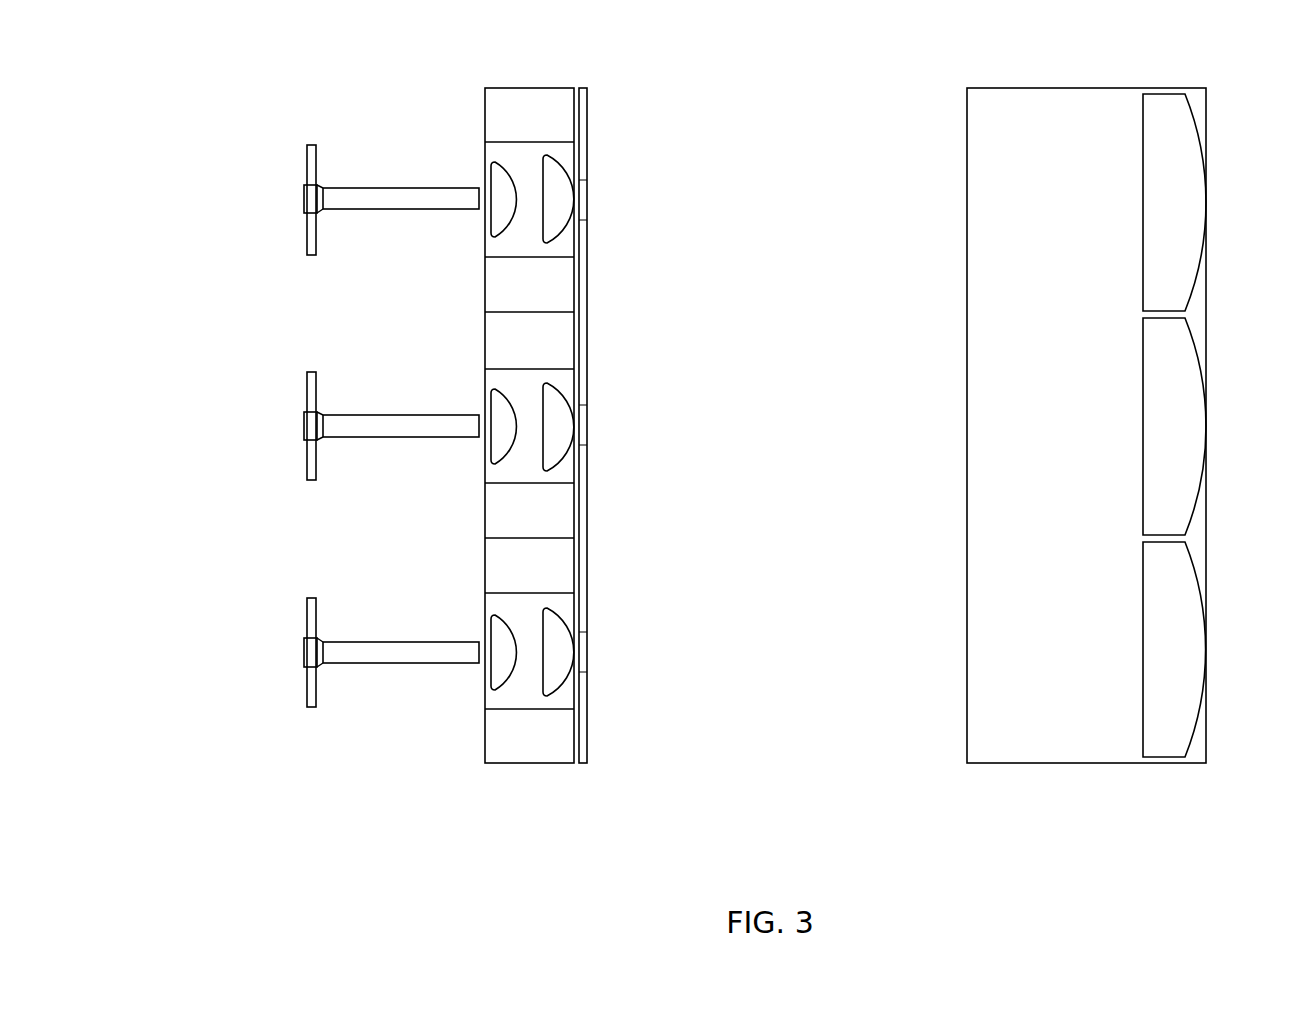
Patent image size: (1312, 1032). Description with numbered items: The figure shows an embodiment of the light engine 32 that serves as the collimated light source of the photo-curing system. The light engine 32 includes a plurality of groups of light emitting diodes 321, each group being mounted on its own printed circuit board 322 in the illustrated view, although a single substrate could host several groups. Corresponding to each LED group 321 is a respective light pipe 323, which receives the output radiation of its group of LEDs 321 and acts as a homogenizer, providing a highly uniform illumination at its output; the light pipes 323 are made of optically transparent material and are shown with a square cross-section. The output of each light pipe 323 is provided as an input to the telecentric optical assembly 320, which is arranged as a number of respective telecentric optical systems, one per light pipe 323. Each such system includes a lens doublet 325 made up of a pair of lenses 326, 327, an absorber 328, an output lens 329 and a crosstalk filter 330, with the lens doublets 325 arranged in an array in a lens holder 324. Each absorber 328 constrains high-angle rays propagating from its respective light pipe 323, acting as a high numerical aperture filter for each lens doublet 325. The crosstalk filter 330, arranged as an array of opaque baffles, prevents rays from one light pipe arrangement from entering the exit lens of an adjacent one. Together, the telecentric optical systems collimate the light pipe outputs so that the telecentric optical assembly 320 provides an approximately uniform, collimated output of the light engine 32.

The light engine 32 is at (1058, 47).
The telecentric optical assembly 320 is at (467, 797).
The light emitting diode group 321 is at (307, 200).
The printed circuit board 322 is at (308, 693).
The light pipe 323 is at (368, 188).
The lens holder 324 is at (533, 85).
The lens doublet 325 is at (491, 250).
The lens 326 is at (493, 222).
The lens 327 is at (562, 202).
The absorber 328 is at (587, 122).
The output lens 329 is at (1187, 156).
The crosstalk filter 330 is at (975, 131).